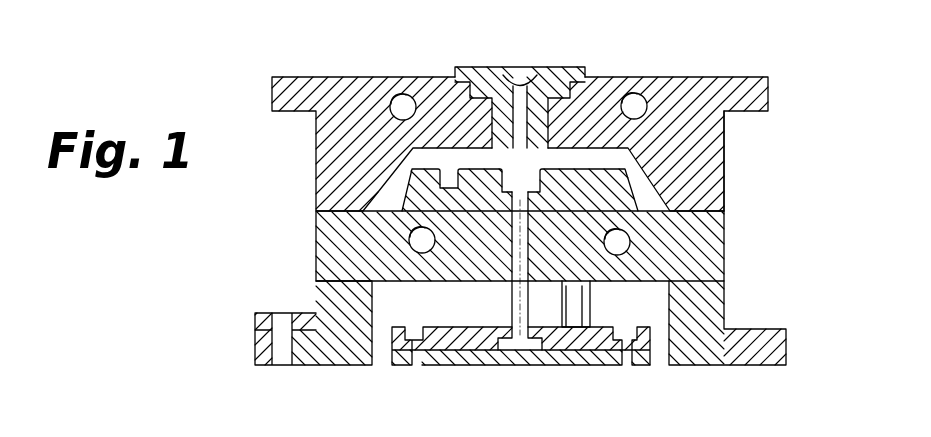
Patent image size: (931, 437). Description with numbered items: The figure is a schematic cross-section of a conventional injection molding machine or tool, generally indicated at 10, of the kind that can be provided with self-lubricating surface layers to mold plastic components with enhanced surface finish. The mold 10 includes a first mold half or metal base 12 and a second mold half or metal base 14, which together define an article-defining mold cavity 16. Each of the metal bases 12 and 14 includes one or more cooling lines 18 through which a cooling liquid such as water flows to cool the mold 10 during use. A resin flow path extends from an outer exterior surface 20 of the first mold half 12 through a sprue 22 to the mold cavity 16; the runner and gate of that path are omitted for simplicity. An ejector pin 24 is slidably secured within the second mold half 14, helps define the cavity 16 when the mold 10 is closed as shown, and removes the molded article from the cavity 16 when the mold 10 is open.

The injection molding machine or tool 10 is at (767, 64).
The first mold half or metal base 12 is at (727, 186).
The second mold half or metal base 14 is at (727, 246).
The article-defining mold cavity 16 is at (596, 152).
The cooling lines 18 is at (404, 94).
The outer exterior surface 20 is at (350, 76).
The sprue 22 is at (540, 71).
The ejector pin 24 is at (508, 302).